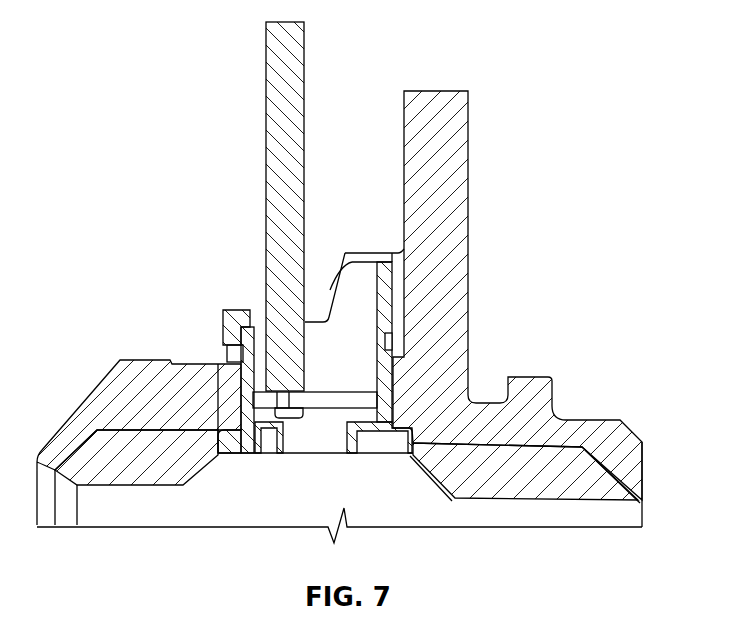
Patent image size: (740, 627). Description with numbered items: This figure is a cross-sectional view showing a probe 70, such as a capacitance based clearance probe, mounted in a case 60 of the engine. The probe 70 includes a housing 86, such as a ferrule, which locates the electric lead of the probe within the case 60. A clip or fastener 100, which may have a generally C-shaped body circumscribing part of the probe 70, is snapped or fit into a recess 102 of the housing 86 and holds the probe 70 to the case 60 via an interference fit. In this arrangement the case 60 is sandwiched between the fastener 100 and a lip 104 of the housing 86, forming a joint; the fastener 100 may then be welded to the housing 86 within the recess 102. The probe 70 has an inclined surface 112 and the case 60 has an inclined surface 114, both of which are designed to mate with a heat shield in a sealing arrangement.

The case 60 is at (116, 390).
The probe 70 is at (232, 286).
The housing 86 is at (386, 405).
The fastener 100 is at (228, 346).
The recess 102 is at (207, 366).
The lip 104 is at (253, 455).
The inclined surface 112 is at (331, 284).
The inclined surface 114 is at (341, 251).